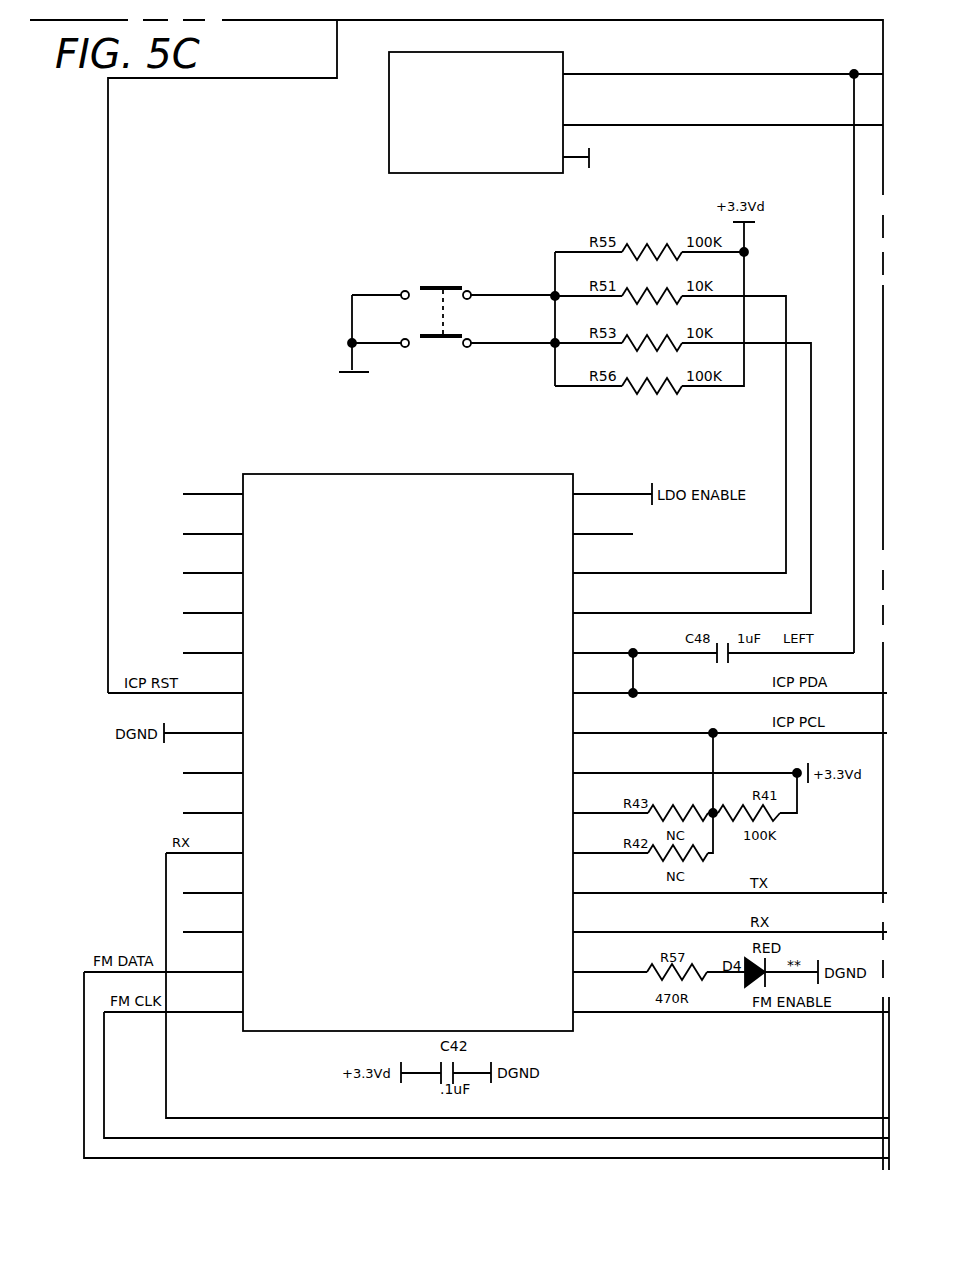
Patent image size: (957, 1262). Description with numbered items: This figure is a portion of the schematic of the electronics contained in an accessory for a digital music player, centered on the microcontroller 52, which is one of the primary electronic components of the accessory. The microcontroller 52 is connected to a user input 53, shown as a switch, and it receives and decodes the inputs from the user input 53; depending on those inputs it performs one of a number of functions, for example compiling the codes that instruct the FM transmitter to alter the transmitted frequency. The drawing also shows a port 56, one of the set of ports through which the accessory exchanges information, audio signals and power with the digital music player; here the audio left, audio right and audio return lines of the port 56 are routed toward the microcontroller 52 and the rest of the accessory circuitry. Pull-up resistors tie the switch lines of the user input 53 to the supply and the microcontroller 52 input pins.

The microcontroller 52 is at (307, 474).
The user input 53 is at (376, 256).
The port 56 is at (548, 175).